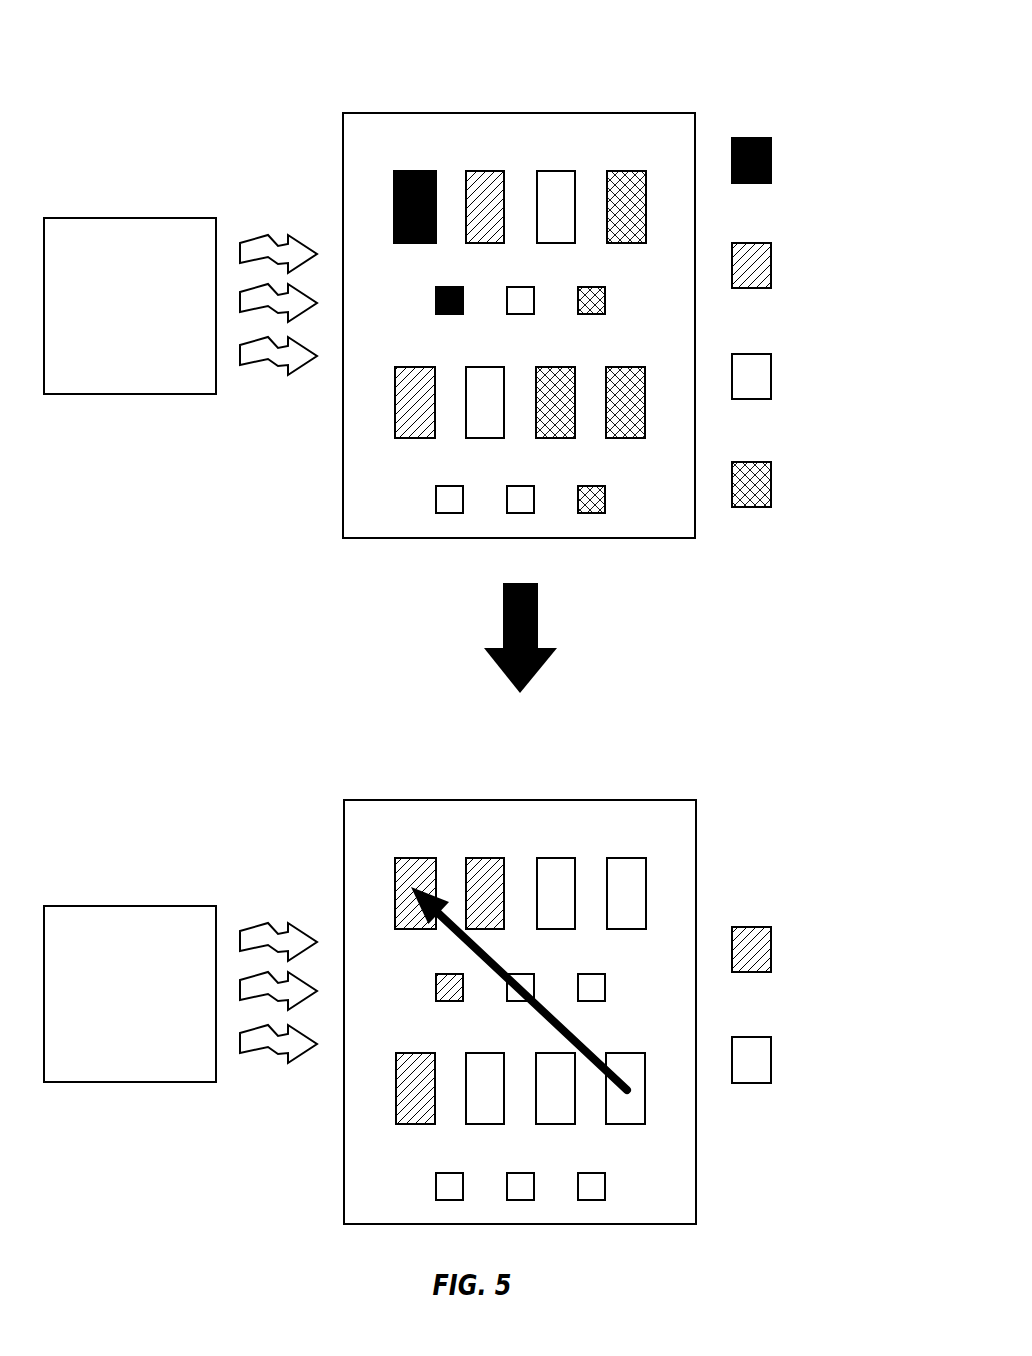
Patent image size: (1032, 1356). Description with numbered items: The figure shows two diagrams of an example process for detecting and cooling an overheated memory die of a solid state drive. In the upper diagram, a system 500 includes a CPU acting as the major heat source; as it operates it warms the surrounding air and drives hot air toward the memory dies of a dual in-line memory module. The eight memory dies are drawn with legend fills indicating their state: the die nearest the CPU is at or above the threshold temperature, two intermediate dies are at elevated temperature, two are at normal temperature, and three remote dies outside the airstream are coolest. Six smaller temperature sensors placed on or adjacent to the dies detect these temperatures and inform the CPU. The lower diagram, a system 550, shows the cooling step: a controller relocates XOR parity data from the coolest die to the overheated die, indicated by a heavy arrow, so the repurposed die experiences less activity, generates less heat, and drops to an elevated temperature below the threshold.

The system 500 is at (99, 75).
The system 550 is at (99, 764).